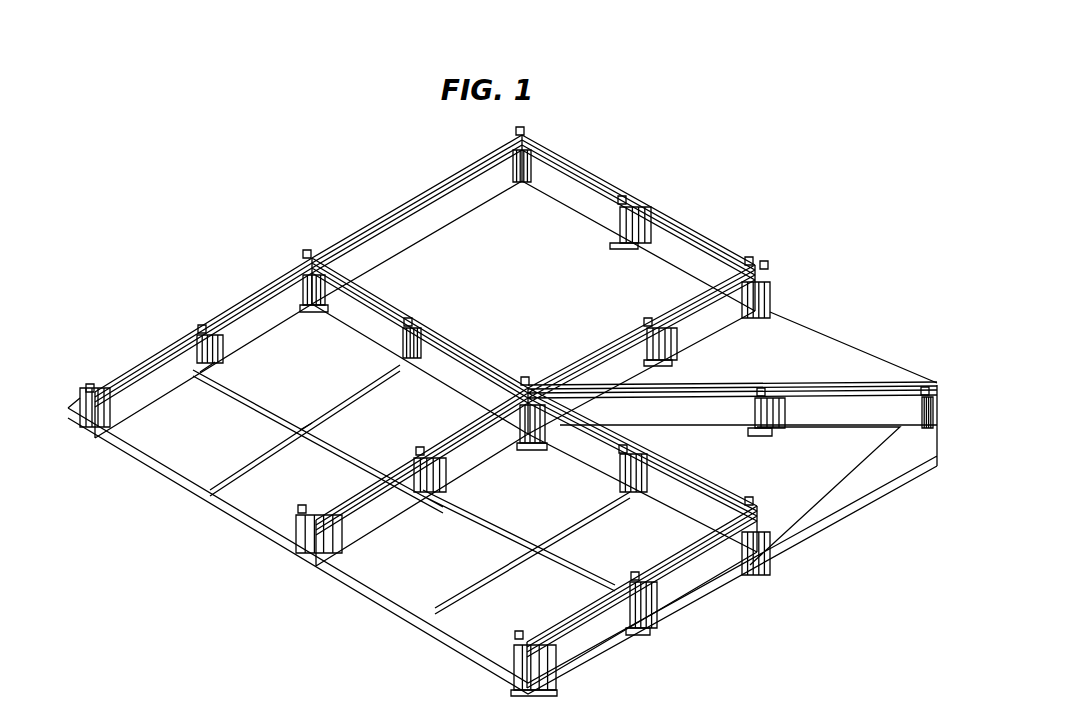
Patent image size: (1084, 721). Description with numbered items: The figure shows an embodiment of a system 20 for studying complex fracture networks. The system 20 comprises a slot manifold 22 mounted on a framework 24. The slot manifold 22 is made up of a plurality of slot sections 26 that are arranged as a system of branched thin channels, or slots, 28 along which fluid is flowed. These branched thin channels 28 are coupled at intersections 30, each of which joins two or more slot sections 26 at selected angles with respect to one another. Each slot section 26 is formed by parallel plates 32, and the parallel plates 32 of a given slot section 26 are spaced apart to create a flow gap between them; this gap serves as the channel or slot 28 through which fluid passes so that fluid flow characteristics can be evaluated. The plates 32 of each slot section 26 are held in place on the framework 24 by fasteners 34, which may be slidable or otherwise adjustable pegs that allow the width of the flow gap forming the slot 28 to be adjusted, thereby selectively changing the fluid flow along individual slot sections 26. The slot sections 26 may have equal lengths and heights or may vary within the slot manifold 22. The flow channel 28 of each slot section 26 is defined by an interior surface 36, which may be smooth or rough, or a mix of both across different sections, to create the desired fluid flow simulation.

The system 20 is at (246, 211).
The slot manifold 22 is at (724, 596).
The framework 24 is at (452, 193).
The slot section 26 is at (508, 400).
The branched thin channel 28 is at (660, 214).
The intersection 30 is at (318, 249).
The parallel plate 32 is at (572, 162).
The fastener 34 is at (770, 277).
The interior surface 36 is at (347, 481).